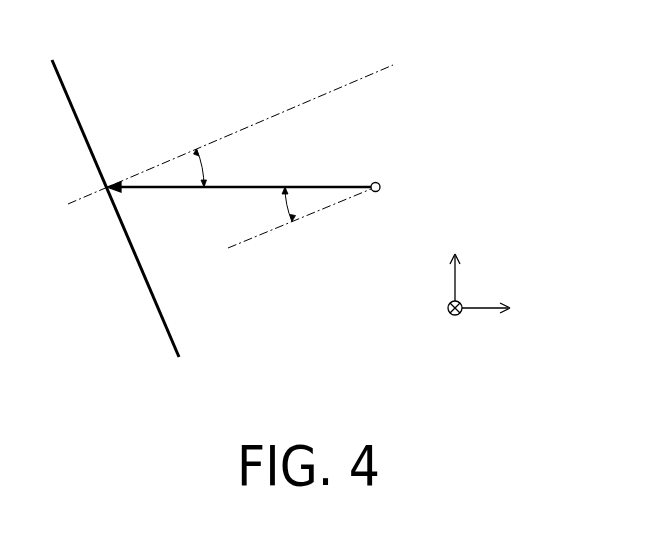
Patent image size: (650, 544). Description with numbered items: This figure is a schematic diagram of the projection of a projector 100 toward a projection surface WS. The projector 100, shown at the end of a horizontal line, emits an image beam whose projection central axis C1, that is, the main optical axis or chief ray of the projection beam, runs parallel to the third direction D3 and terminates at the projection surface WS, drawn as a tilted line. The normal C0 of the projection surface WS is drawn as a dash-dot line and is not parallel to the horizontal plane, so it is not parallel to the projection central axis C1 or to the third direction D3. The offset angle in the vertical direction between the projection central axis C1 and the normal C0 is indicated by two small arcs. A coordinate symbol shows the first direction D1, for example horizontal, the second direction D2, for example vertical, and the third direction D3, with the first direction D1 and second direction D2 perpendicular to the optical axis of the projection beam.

The projection surface WS is at (85, 108).
The normal of the projection surface C0 is at (270, 117).
The projection central axis C1 is at (255, 186).
The projector 100 is at (379, 183).
The first direction D1 is at (440, 317).
The second direction D2 is at (457, 261).
The third direction D3 is at (502, 310).